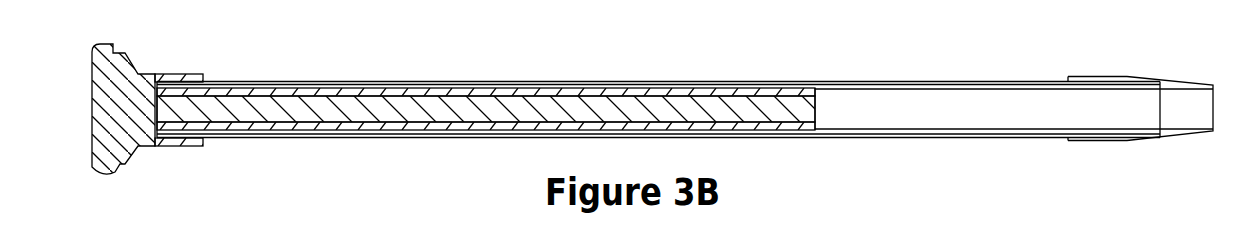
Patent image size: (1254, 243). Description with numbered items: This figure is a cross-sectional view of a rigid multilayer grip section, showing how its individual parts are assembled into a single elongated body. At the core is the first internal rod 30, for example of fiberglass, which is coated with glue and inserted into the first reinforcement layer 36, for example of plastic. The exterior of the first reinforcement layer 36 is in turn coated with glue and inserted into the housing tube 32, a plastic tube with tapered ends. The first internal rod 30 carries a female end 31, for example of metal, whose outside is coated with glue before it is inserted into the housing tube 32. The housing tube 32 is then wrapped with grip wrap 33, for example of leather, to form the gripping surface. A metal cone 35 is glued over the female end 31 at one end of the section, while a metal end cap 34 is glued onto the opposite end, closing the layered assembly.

The first internal rod 30 is at (314, 109).
The female end 31 is at (933, 88).
The housing tube 32 is at (556, 92).
The grip wrap 33 is at (718, 80).
The end cap 34 is at (133, 65).
The cone 35 is at (1124, 75).
The first reinforcement layer 36 is at (453, 85).